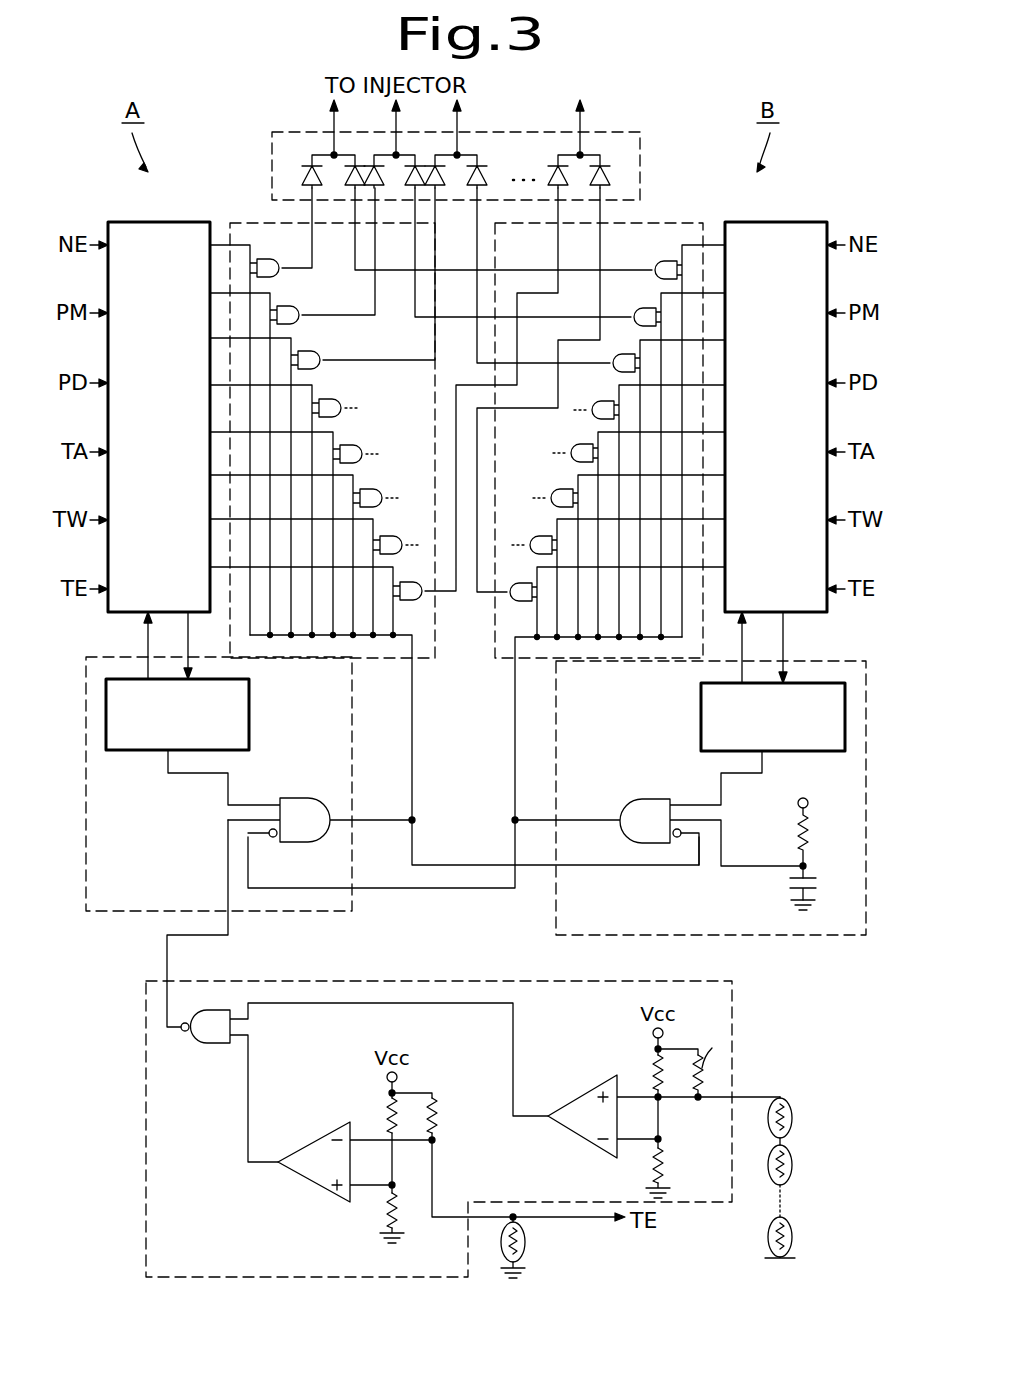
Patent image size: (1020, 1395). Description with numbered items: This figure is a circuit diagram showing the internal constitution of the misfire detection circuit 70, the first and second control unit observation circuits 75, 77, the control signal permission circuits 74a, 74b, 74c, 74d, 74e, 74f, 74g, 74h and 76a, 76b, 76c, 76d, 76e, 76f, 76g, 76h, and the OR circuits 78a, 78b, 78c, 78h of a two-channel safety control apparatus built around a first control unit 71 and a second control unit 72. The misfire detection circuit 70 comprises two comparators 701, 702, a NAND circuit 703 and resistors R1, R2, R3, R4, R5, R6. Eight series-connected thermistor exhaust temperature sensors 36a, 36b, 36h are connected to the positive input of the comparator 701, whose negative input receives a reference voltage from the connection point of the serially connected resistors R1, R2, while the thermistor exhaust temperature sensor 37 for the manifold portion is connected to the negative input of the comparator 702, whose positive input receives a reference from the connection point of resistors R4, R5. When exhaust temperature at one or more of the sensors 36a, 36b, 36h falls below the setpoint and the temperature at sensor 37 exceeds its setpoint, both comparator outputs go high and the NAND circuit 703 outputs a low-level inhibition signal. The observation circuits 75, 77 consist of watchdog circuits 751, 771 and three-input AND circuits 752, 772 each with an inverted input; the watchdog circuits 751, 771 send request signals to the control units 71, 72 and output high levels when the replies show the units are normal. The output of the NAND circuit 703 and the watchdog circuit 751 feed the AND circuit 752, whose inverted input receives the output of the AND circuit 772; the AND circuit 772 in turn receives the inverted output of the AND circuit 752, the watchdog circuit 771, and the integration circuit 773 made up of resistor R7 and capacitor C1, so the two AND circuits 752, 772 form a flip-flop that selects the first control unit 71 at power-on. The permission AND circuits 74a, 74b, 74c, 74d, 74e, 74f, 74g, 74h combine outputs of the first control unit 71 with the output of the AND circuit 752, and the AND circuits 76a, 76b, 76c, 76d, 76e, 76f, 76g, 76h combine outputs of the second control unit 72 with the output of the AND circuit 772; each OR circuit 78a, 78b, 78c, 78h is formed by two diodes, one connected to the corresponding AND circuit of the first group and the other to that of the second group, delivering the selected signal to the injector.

The first control unit 71 is at (185, 222).
The second control unit 72 is at (795, 222).
The control signal permission circuit 74a is at (272, 262).
The control signal permission circuit 74b is at (290, 309).
The control signal permission circuit 74c is at (312, 355).
The control signal permission circuit 74d is at (326, 399).
The control signal permission circuit 74e is at (352, 453).
The control signal permission circuit 74f is at (370, 495).
The control signal permission circuit 74g is at (382, 541).
The control signal permission circuit 74h is at (426, 598).
The control signal permission circuit 76a is at (660, 262).
The control signal permission circuit 76b is at (646, 309).
The control signal permission circuit 76c is at (620, 355).
The control signal permission circuit 76d is at (602, 401).
The control signal permission circuit 76e is at (574, 453).
The control signal permission circuit 76f is at (552, 495).
The control signal permission circuit 76g is at (540, 541).
The control signal permission circuit 76h is at (522, 602).
The OR circuit 78a is at (312, 155).
The OR circuit 78b is at (402, 155).
The OR circuit 78c is at (462, 155).
The OR circuit 78h is at (584, 155).
The first control unit observation circuit 75 is at (352, 690).
The watchdog circuit 751 is at (252, 690).
The AND circuit 752 is at (310, 797).
The second control unit observation circuit 77 is at (556, 706).
The watchdog circuit 771 is at (701, 692).
The AND circuit 772 is at (653, 799).
The integration circuit 773 is at (762, 848).
The misfire detection circuit 70 is at (450, 981).
The comparator 701 is at (583, 1095).
The comparator 702 is at (313, 1141).
The NAND circuit 703 is at (210, 1043).
The exhaust temperature sensor 36a is at (793, 1118).
The exhaust temperature sensor 36b is at (793, 1165).
The exhaust temperature sensor 36h is at (793, 1237).
The exhaust temperature sensor 37 is at (527, 1240).
The resistor R1 is at (643, 1072).
The resistor R2 is at (642, 1166).
The resistor R3 is at (699, 1061).
The resistor R4 is at (376, 1115).
The resistor R5 is at (376, 1214).
The resistor R6 is at (448, 1115).
The resistor R7 is at (819, 843).
The capacitor C1 is at (780, 880).